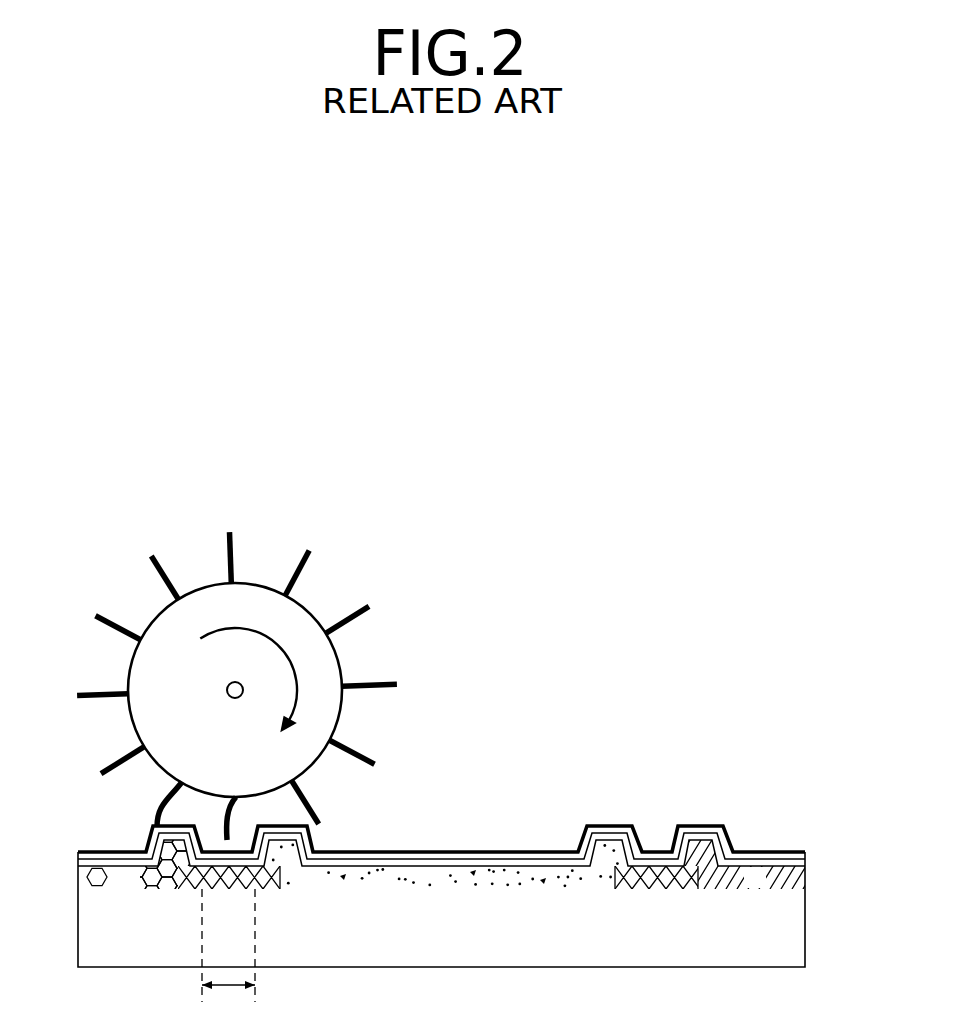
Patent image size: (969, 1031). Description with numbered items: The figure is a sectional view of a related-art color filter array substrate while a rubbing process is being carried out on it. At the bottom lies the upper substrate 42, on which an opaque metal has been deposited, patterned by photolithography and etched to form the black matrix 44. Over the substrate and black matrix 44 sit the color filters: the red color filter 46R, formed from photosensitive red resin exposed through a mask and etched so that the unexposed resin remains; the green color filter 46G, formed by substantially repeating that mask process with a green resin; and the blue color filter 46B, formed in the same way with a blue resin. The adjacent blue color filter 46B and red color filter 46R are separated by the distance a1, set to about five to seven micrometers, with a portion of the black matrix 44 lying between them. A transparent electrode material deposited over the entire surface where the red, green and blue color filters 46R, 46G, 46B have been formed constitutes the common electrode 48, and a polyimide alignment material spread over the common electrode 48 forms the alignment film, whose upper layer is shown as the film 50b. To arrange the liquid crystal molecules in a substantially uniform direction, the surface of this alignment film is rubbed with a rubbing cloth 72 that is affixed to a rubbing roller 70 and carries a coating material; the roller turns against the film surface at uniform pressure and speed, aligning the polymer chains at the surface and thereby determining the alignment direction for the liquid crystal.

The upper substrate 42 is at (805, 929).
The black matrix 44 is at (643, 878).
The blue color filter 46B is at (160, 878).
The red color filter 46R is at (400, 878).
The green color filter 46G is at (773, 878).
The common electrode 48 is at (805, 860).
The alignment layer 50b is at (805, 852).
The rubbing roller 70 is at (337, 657).
The rubbing cloth 72 is at (397, 684).
The distance between blue color filter and red color filter a1 is at (228, 953).